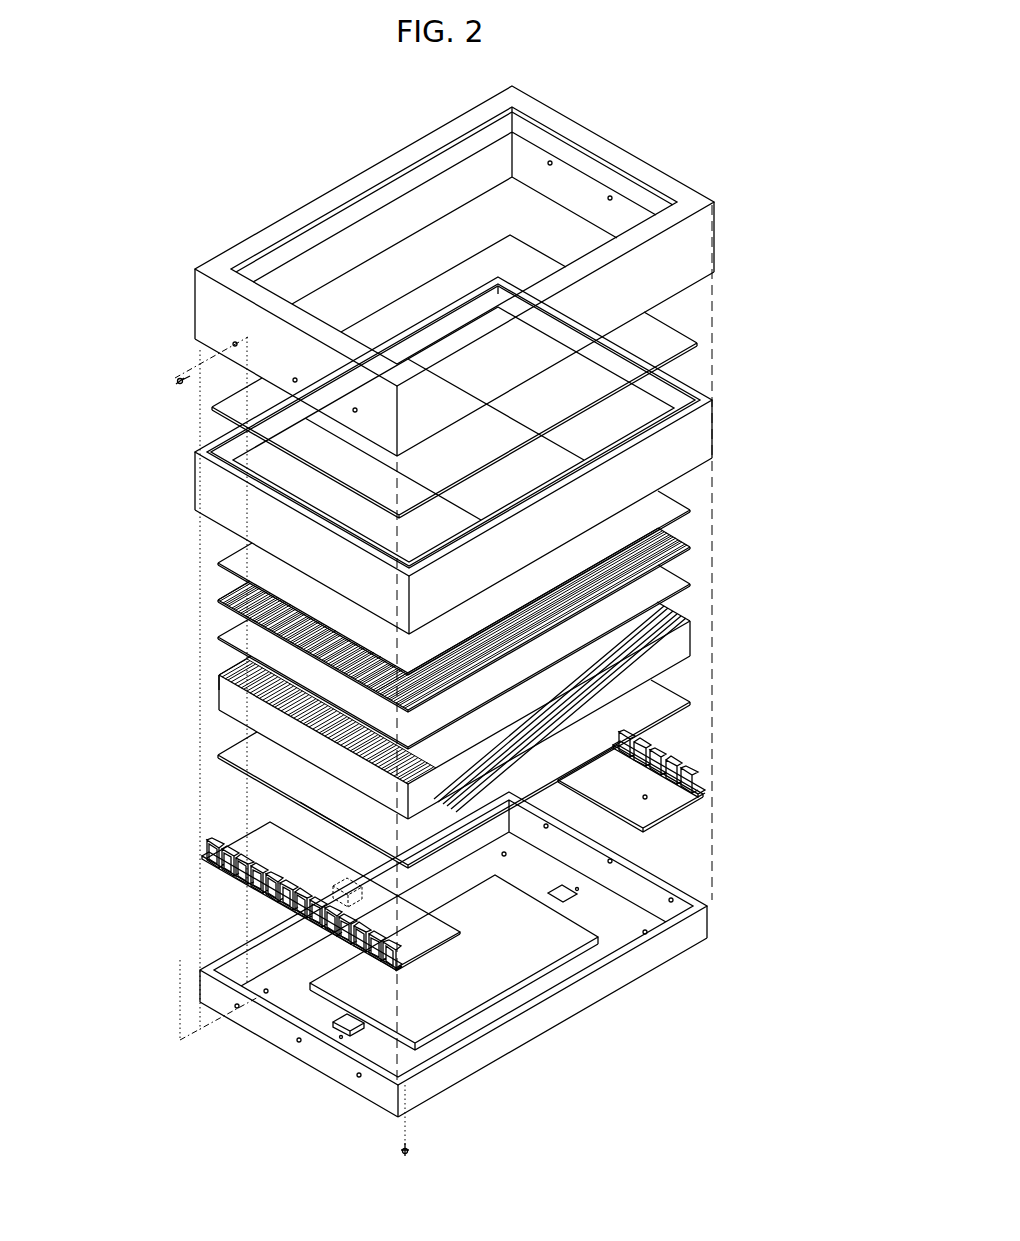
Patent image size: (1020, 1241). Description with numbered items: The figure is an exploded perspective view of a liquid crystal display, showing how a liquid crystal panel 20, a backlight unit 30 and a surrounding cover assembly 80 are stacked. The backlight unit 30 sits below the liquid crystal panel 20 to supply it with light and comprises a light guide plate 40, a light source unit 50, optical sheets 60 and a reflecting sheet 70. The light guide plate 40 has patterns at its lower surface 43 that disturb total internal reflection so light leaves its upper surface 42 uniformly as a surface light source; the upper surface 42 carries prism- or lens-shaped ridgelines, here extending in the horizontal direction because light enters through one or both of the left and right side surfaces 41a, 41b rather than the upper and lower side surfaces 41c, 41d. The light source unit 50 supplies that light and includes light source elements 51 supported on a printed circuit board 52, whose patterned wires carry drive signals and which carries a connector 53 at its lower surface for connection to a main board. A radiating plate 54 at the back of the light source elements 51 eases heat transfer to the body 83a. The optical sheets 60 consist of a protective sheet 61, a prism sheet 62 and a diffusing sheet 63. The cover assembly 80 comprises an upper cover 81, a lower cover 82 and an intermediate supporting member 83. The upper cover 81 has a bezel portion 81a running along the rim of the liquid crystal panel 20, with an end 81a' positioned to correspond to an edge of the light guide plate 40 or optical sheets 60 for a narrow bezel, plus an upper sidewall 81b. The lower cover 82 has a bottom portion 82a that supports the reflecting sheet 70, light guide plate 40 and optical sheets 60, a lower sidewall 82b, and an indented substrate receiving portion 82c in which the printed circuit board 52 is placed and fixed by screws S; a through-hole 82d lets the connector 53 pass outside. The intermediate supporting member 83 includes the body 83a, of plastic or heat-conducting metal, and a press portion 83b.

The liquid crystal panel 20 is at (684, 341).
The backlight unit 30 is at (797, 503).
The light guide plate 40 is at (686, 642).
The left side surface 41a is at (258, 716).
The right side surface 41b is at (678, 657).
The upper side surface 41c is at (218, 689).
The lower side surface 41d is at (499, 757).
The upper surface 42 is at (232, 668).
The lower surface 43 is at (355, 790).
The light source unit 50 is at (757, 757).
The light source elements 51 is at (670, 754).
The printed circuit board 52 is at (672, 805).
The connector 53 is at (347, 884).
The radiating plate 54 is at (218, 846).
The optical sheets 60 is at (757, 499).
The protective sheet 61 is at (688, 514).
The prism sheet 62 is at (690, 550).
The diffusing sheet 63 is at (690, 585).
The reflecting sheet 70 is at (675, 712).
The cover assembly 80 is at (381, 607).
The upper cover 81 is at (128, 262).
The bezel portion 81a is at (423, 236).
The end of the bezel portion 81a' is at (451, 235).
The upper sidewall 81b is at (204, 312).
The lower cover 82 is at (318, 1090).
The bottom portion 82a is at (332, 988).
The lower sidewall 82b is at (259, 1025).
The substrate receiving portion 82c is at (429, 1050).
The through-hole 82d is at (350, 1030).
The intermediate supporting member 83 is at (128, 455).
The body 83a is at (207, 497).
The press portion 83b is at (233, 465).
The screws S is at (178, 380).